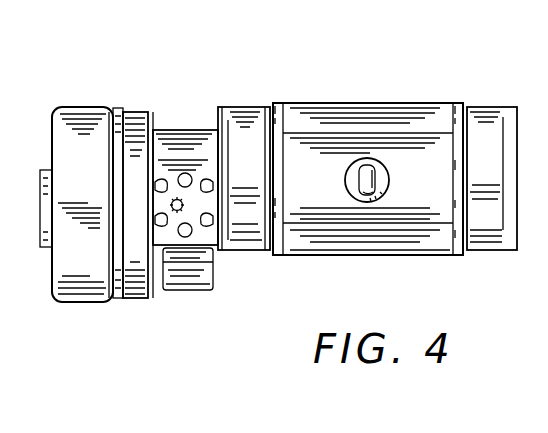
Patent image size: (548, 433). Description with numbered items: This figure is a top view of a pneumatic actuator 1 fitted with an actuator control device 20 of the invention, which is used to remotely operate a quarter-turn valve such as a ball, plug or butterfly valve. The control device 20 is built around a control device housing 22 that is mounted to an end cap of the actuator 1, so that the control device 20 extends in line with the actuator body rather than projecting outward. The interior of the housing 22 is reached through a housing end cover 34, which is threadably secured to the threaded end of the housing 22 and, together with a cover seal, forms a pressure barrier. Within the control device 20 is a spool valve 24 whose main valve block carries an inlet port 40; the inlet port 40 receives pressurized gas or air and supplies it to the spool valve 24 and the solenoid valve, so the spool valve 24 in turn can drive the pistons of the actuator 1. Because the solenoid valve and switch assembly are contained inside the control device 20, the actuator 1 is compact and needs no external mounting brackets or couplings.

The pneumatic actuator 1 is at (443, 72).
The actuator control device 20 is at (162, 74).
The control device housing 22 is at (150, 306).
The spool valve 24 is at (172, 130).
The housing end cover 34 is at (95, 110).
The inlet port 40 is at (177, 211).